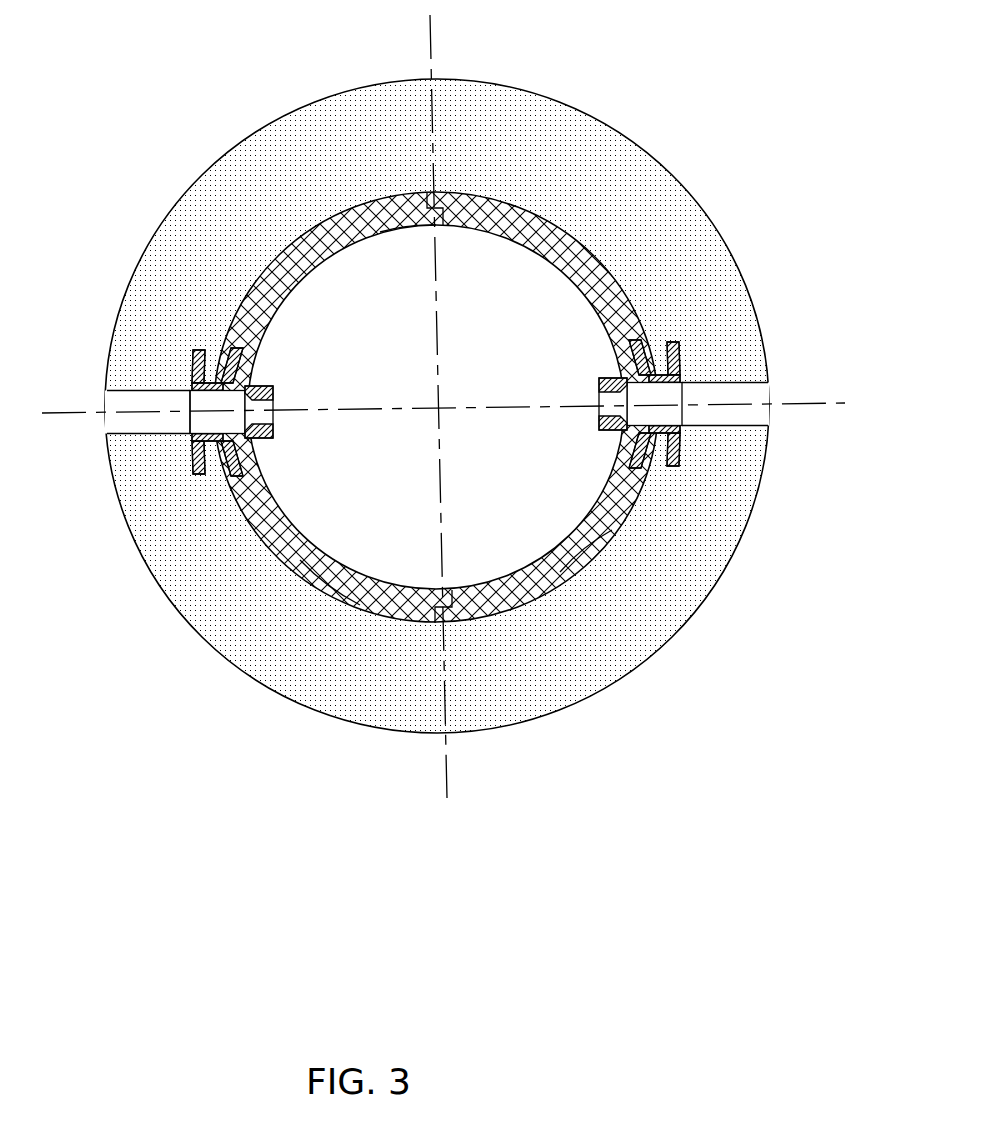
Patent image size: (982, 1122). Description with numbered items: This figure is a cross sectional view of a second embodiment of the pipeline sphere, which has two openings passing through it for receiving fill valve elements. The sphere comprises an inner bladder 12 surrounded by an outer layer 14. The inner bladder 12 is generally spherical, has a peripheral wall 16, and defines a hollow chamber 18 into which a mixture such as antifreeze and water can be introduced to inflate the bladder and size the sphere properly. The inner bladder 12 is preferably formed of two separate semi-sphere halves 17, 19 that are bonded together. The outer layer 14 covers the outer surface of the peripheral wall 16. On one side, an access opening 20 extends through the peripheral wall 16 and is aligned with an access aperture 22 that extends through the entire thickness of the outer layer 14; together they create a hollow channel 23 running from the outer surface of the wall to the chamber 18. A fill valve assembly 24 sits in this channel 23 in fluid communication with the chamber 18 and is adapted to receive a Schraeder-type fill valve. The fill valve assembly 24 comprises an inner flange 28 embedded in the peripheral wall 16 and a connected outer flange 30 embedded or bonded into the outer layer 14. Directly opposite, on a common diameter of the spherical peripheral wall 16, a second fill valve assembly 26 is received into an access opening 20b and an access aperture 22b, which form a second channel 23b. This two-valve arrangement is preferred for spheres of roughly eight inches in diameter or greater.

The inner bladder 12 is at (522, 223).
The outer layer 14 is at (715, 283).
The peripheral wall 16 is at (607, 263).
The semi-sphere half 17 is at (613, 538).
The hollow chamber 18 is at (392, 253).
The semi-sphere half 19 is at (350, 603).
The access opening 20 is at (218, 378).
The access opening 20b is at (685, 367).
The access aperture 22 is at (185, 390).
The access aperture 22b is at (685, 423).
The hollow channel 23 is at (127, 423).
The channel 23b is at (760, 412).
The fill valve assembly 24 is at (190, 422).
The second fill valve assembly 26 is at (682, 395).
The inner flange 28 is at (237, 485).
The outer flange 30 is at (200, 475).